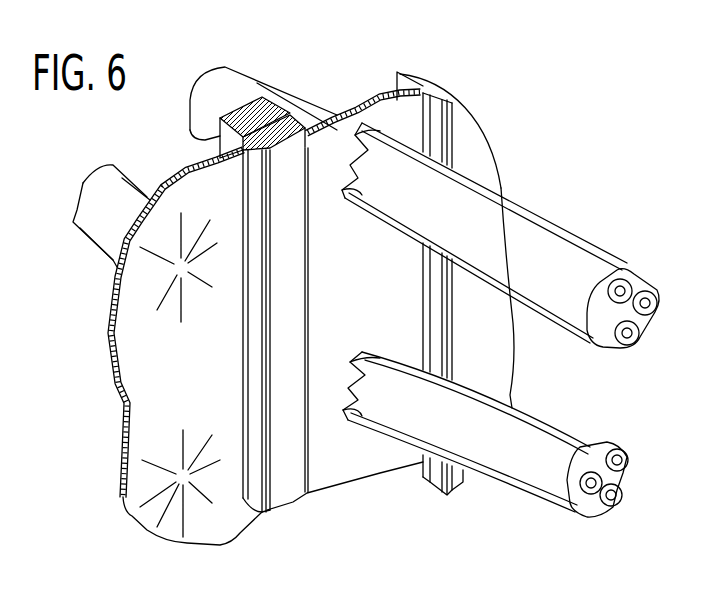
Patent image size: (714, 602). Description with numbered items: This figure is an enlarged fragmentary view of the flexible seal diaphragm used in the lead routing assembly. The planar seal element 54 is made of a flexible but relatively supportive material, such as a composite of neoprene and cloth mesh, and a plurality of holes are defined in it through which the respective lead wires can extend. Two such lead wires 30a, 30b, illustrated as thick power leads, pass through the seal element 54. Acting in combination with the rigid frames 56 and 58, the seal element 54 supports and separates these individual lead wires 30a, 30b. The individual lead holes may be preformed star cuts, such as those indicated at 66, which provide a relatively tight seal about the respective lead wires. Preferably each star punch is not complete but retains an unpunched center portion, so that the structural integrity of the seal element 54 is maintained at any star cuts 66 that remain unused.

The lead wire 30a is at (553, 240).
The lead wire 30b is at (518, 422).
The planar seal element 54 is at (177, 367).
The rigid frame 56 is at (227, 138).
The rigid frame 58 is at (287, 443).
The star cut 66 is at (177, 273).